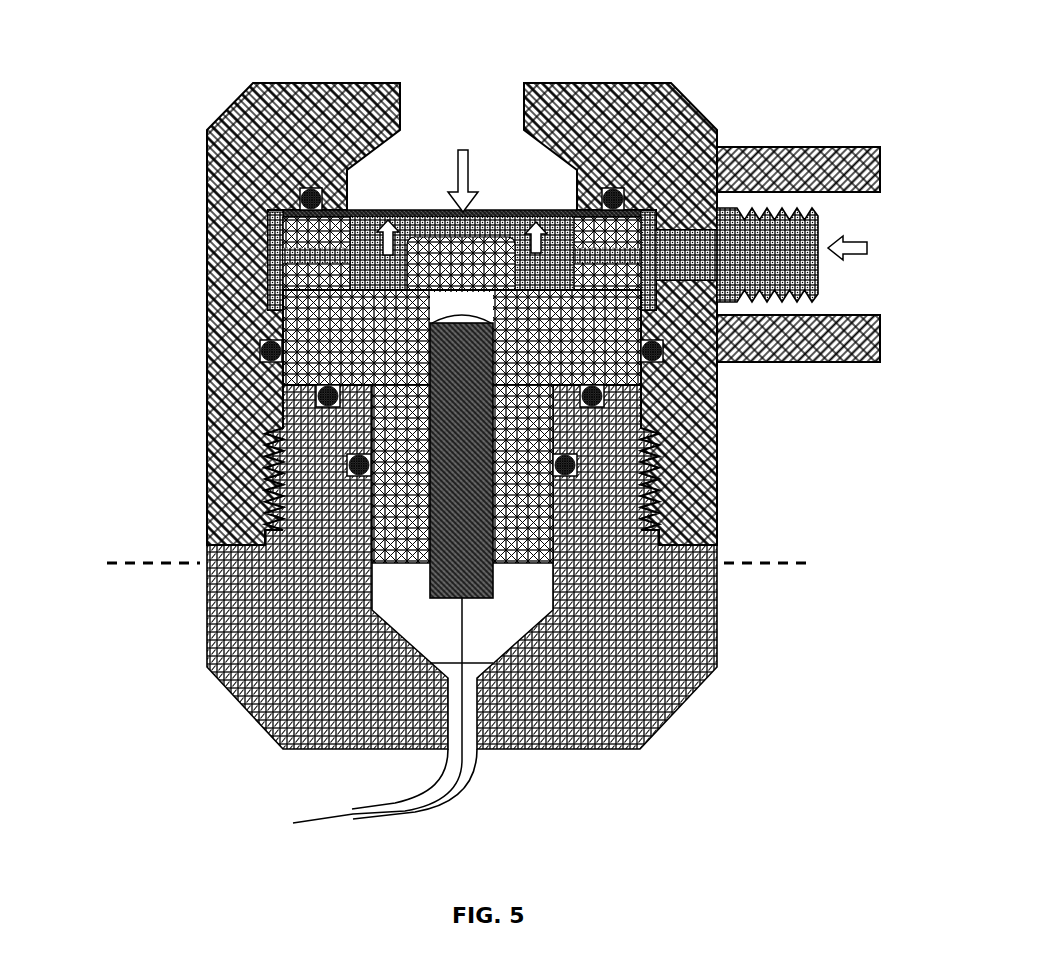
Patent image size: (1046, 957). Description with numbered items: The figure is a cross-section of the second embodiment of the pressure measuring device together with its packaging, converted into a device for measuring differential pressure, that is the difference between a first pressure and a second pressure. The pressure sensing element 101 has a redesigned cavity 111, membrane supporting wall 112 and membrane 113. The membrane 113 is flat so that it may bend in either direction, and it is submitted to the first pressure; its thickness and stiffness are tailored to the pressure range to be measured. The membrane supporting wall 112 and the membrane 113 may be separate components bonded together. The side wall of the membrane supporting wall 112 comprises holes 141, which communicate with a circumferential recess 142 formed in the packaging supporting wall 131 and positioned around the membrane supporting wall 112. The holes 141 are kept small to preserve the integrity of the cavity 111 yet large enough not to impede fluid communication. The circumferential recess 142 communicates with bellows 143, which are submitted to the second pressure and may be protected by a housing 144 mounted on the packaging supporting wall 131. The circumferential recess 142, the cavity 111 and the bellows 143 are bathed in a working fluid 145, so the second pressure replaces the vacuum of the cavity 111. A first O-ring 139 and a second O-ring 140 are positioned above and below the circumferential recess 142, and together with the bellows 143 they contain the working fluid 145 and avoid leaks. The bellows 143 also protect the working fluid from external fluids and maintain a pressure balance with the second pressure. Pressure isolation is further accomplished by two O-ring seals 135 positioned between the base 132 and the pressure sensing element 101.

The pressure sensing element 101 is at (503, 419).
The cavity 111 is at (475, 217).
The membrane supporting wall 112 is at (222, 192).
The membrane 113 is at (400, 212).
The packaging supporting wall 131 is at (408, 314).
The base 132 is at (220, 642).
The O-ring seals 135 is at (577, 468).
The first O-ring 139 is at (603, 188).
The second O-ring 140 is at (665, 345).
The holes 141 is at (298, 253).
The circumferential recess 142 is at (275, 285).
The bellows 143 is at (818, 272).
The housing 144 is at (848, 147).
The working fluid 145 is at (371, 390).